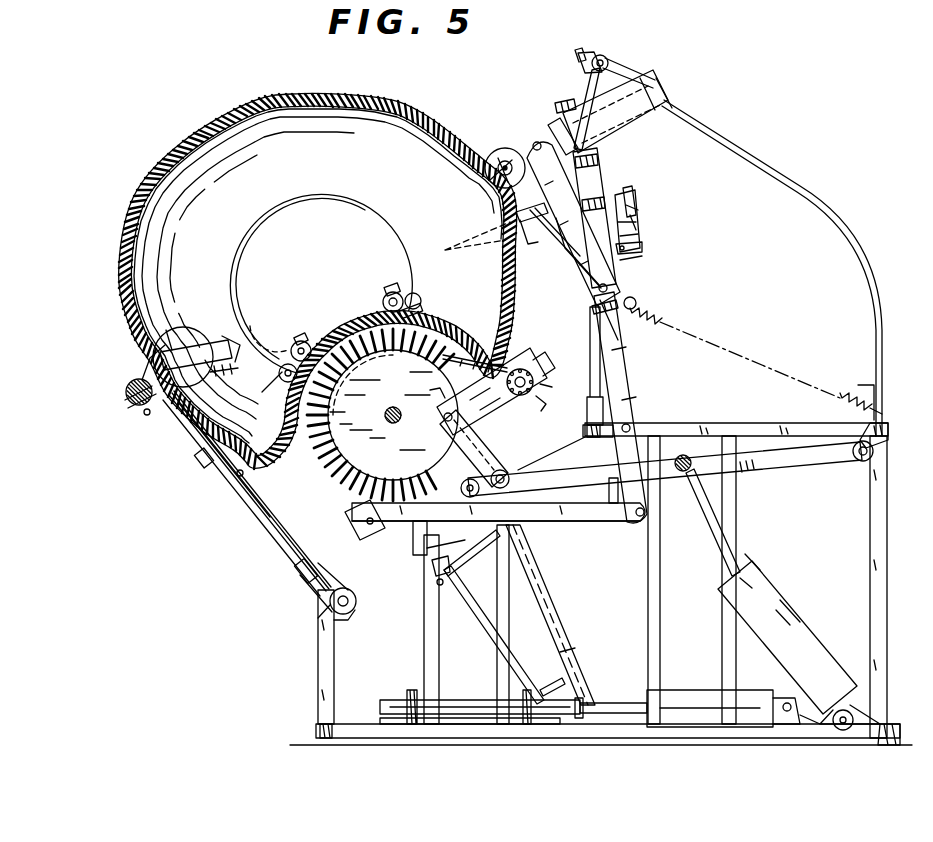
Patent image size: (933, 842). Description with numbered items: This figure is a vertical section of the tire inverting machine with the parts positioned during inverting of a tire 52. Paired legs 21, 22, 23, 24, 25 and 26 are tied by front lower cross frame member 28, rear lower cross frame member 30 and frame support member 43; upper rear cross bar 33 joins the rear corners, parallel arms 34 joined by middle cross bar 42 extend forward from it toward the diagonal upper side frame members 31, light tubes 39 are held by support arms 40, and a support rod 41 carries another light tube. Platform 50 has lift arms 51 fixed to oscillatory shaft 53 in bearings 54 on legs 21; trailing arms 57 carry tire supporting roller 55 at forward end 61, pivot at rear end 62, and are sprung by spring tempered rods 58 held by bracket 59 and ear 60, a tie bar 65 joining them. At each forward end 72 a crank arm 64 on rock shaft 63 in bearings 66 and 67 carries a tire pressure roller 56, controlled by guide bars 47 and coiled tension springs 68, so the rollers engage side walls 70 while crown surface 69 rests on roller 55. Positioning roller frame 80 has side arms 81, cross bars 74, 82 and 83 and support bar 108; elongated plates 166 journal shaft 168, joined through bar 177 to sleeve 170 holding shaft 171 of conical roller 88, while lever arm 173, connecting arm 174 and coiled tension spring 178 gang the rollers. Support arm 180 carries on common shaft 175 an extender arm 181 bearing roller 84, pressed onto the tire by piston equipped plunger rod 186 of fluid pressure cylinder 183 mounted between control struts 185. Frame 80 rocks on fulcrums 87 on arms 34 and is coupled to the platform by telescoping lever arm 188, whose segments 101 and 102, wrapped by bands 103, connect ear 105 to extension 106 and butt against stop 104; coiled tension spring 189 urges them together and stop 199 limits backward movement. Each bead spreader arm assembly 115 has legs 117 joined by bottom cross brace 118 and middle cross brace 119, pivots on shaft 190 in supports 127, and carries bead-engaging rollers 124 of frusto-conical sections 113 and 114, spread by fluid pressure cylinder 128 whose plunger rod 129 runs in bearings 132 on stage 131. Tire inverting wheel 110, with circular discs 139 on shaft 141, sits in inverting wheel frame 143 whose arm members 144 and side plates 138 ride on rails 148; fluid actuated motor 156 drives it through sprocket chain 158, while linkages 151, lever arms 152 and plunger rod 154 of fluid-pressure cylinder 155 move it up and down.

The left frame post 21 is at (318, 663).
The frame post 22 is at (424, 660).
The frame post 23 is at (500, 597).
The frame post 24 is at (648, 598).
The frame post 25 is at (722, 615).
The right frame post 26 is at (870, 550).
The base member 28 is at (318, 737).
The base corner 30 is at (886, 745).
The cross member 31 is at (413, 564).
The corner bracket 33 is at (892, 440).
The top frame bar 34 is at (752, 426).
The curved frame tube 39 is at (762, 165).
The piston rod 40 is at (590, 345).
The link 41 is at (608, 58).
The bracket 42 is at (645, 425).
The base corner 43 is at (355, 738).
The guide 47 is at (290, 372).
The strut 50 is at (246, 514).
The strut lower section 51 is at (308, 580).
The drum shell 52 is at (109, 276).
The pivot 53 is at (357, 604).
The pivot bracket 54 is at (350, 615).
The bracket 55 is at (128, 404).
The inner opening 56 is at (248, 324).
The bar 57 is at (200, 448).
The rod 58 is at (275, 522).
The clamp 59 is at (298, 566).
The clamp 60 is at (195, 471).
The roller 61 is at (126, 392).
The pin 62 is at (246, 473).
The cylinder 63 is at (196, 352).
The housing 64 is at (188, 342).
The pin 65 is at (146, 416).
The spring 66 is at (216, 378).
The pin 67 is at (159, 332).
The arm 68 is at (236, 370).
The drum lining 69 is at (122, 240).
The drum wall 70 is at (195, 200).
The bracket 72 is at (140, 366).
The arm 74 is at (600, 150).
The hydraulic cylinder 80 is at (611, 177).
The strut 81 is at (636, 366).
The strut 82 is at (628, 345).
The plate 83 is at (624, 200).
The shaft 84 is at (503, 150).
The pin 87 is at (628, 424).
The bracket 88 is at (533, 248).
The bar 101 is at (620, 521).
The post 102 is at (420, 550).
The brace 103 is at (474, 552).
The horizontal bar 104 is at (540, 521).
The plate 105 is at (345, 525).
The bar end 106 is at (656, 512).
The block 108 is at (566, 99).
The gear 110 is at (331, 485).
The roller 113 is at (392, 292).
The roller bracket 114 is at (418, 295).
The diagonal brace 115 is at (479, 622).
The rod 117 is at (520, 662).
The connector 118 is at (550, 682).
The bracket 119 is at (440, 578).
The roller 124 is at (425, 300).
The pin 127 is at (438, 600).
The hydraulic cylinder 128 is at (688, 680).
The hydraulic cylinder 129 is at (380, 707).
The bar 131 is at (480, 726).
The mount 132 is at (408, 692).
The pitch circle 138 is at (445, 466).
The gear disc 139 is at (388, 417).
The hub 141 is at (392, 421).
The cylinder 143 is at (463, 381).
The disc face 144 is at (445, 433).
The link 148 is at (563, 600).
The arm 151 is at (515, 445).
The link 152 is at (762, 470).
The piston rod 154 is at (740, 545).
The hydraulic cylinder 155 is at (800, 612).
The flange 156 is at (532, 362).
The rod 158 is at (470, 356).
The pivot 166 is at (598, 296).
The bracket 168 is at (644, 248).
The bracket 170 is at (530, 214).
The rod 171 is at (560, 225).
The plate 173 is at (640, 232).
The plate 174 is at (640, 218).
The pin 175 is at (636, 298).
The rod 177 is at (590, 270).
The tab 178 is at (636, 205).
The arm 180 is at (645, 264).
The rod 181 is at (580, 284).
The hydraulic cylinder 183 is at (650, 80).
The rod 185 is at (578, 112).
The clevis 186 is at (552, 135).
The bar 188 is at (599, 557).
The spring 189 is at (662, 316).
The pin 190 is at (448, 615).
The post 199 is at (630, 500).